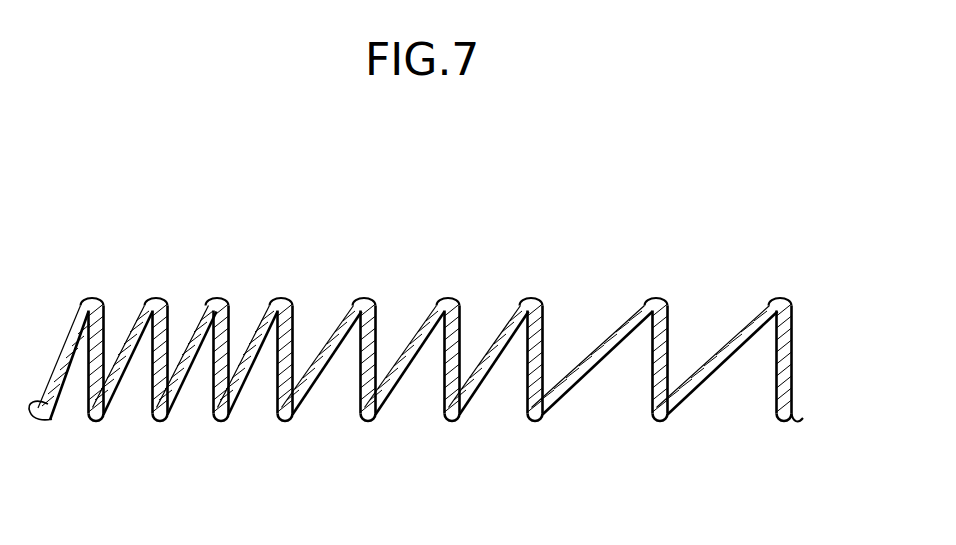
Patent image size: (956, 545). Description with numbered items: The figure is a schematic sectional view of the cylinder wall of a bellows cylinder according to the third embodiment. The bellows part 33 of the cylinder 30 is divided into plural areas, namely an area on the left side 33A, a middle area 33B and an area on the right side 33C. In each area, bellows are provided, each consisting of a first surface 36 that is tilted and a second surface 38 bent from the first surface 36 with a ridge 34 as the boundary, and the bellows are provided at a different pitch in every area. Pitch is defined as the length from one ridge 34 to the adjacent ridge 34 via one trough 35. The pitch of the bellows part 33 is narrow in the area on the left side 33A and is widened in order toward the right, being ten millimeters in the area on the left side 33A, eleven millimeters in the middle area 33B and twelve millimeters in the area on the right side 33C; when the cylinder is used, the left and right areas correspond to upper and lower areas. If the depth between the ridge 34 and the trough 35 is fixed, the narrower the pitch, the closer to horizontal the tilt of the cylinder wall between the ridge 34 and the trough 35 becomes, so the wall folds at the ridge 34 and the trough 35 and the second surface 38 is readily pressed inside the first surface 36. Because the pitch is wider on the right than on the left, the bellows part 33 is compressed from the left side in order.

The cylinder 30 is at (798, 320).
The bellows part 33 is at (784, 358).
The area on the left side 33A is at (292, 220).
The middle area 33B is at (539, 220).
The area on the right side 33C is at (788, 220).
The ridge 34 is at (450, 300).
The trough 35 is at (369, 421).
The first surface 36 is at (410, 340).
The second surface 38 is at (460, 342).